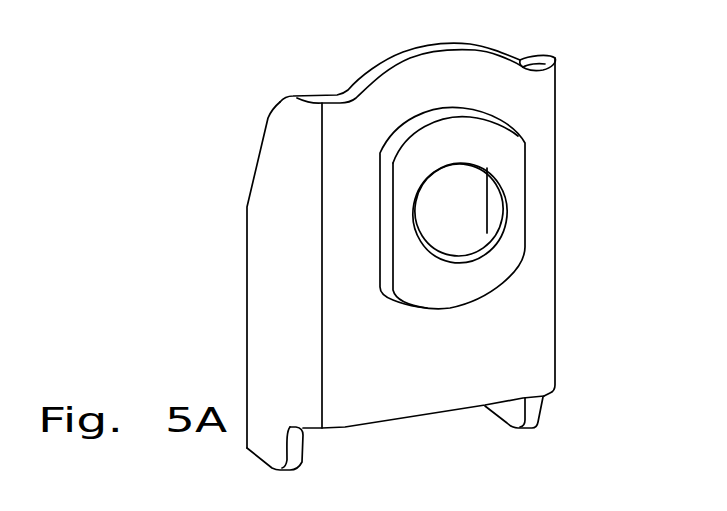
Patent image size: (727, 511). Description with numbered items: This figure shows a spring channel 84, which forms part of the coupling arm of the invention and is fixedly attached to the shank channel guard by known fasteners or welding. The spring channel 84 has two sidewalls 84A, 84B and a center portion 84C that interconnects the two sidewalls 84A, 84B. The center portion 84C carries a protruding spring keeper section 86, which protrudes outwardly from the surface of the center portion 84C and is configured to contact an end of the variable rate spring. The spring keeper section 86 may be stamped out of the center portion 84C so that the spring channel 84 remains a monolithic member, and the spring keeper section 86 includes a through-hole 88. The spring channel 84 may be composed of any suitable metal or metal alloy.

The spring channel 84 is at (403, 256).
The sidewall 84A is at (258, 319).
The sidewall 84B is at (535, 413).
The center portion 84C is at (482, 320).
The spring keeper section 86 is at (498, 257).
The through-hole 88 is at (484, 213).